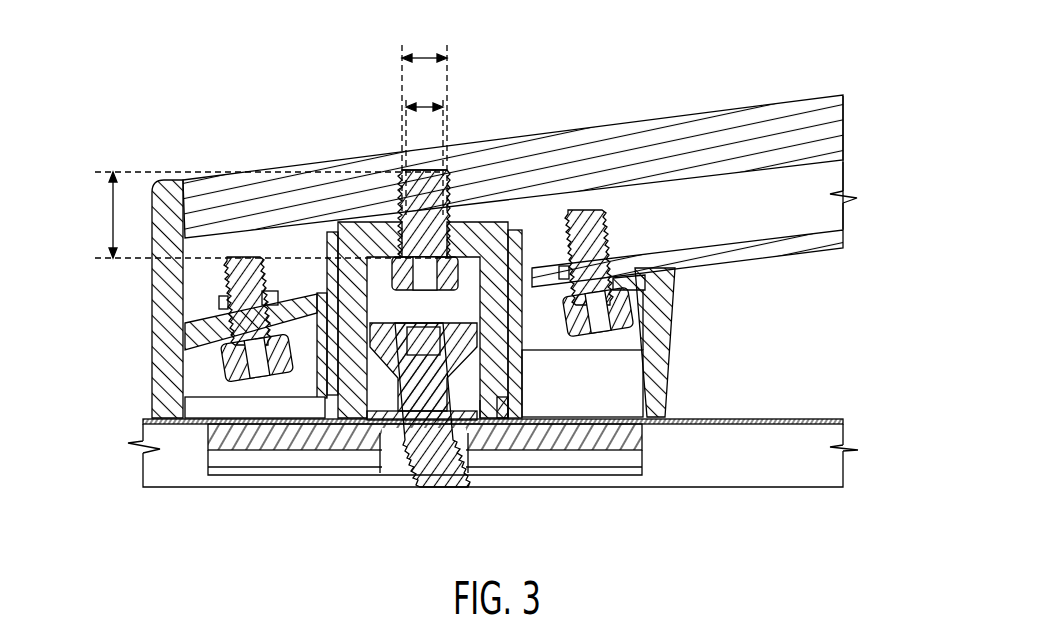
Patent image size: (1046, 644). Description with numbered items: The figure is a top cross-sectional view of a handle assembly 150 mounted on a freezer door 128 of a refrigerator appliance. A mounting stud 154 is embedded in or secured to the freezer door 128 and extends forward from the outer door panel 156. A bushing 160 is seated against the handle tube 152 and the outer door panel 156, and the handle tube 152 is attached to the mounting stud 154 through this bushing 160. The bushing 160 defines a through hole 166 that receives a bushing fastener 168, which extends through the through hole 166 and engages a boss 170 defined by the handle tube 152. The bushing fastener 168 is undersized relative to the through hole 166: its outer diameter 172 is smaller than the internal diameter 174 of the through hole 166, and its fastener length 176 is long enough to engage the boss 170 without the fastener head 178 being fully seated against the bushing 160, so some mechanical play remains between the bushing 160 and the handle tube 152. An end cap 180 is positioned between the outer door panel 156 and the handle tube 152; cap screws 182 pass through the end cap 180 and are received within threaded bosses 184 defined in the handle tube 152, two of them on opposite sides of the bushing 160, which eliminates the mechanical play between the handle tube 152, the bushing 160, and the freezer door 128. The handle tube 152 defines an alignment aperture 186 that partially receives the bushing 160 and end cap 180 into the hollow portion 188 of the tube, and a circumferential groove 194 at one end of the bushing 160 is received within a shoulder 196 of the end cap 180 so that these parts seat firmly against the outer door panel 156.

The freezer door 128 is at (770, 466).
The handle assembly 150 is at (899, 199).
The handle tube 152 is at (797, 108).
The mounting stud 154 is at (427, 448).
The outer door panel 156 is at (779, 410).
The bushing 160 is at (500, 238).
The through hole 166 is at (452, 240).
The bushing fastener 168 is at (405, 200).
The boss 170 is at (447, 172).
The outer diameter 172 is at (426, 105).
The internal diameter 174 is at (427, 56).
The fastener length 176 is at (112, 216).
The fastener head 178 is at (400, 300).
The end cap 180 is at (165, 375).
The cap screw 182 is at (245, 312).
The threaded boss 184 is at (230, 297).
The alignment aperture 186 is at (531, 253).
The hollow portion 188 is at (833, 175).
The circumferential groove 194 is at (513, 407).
The shoulder 196 is at (506, 412).